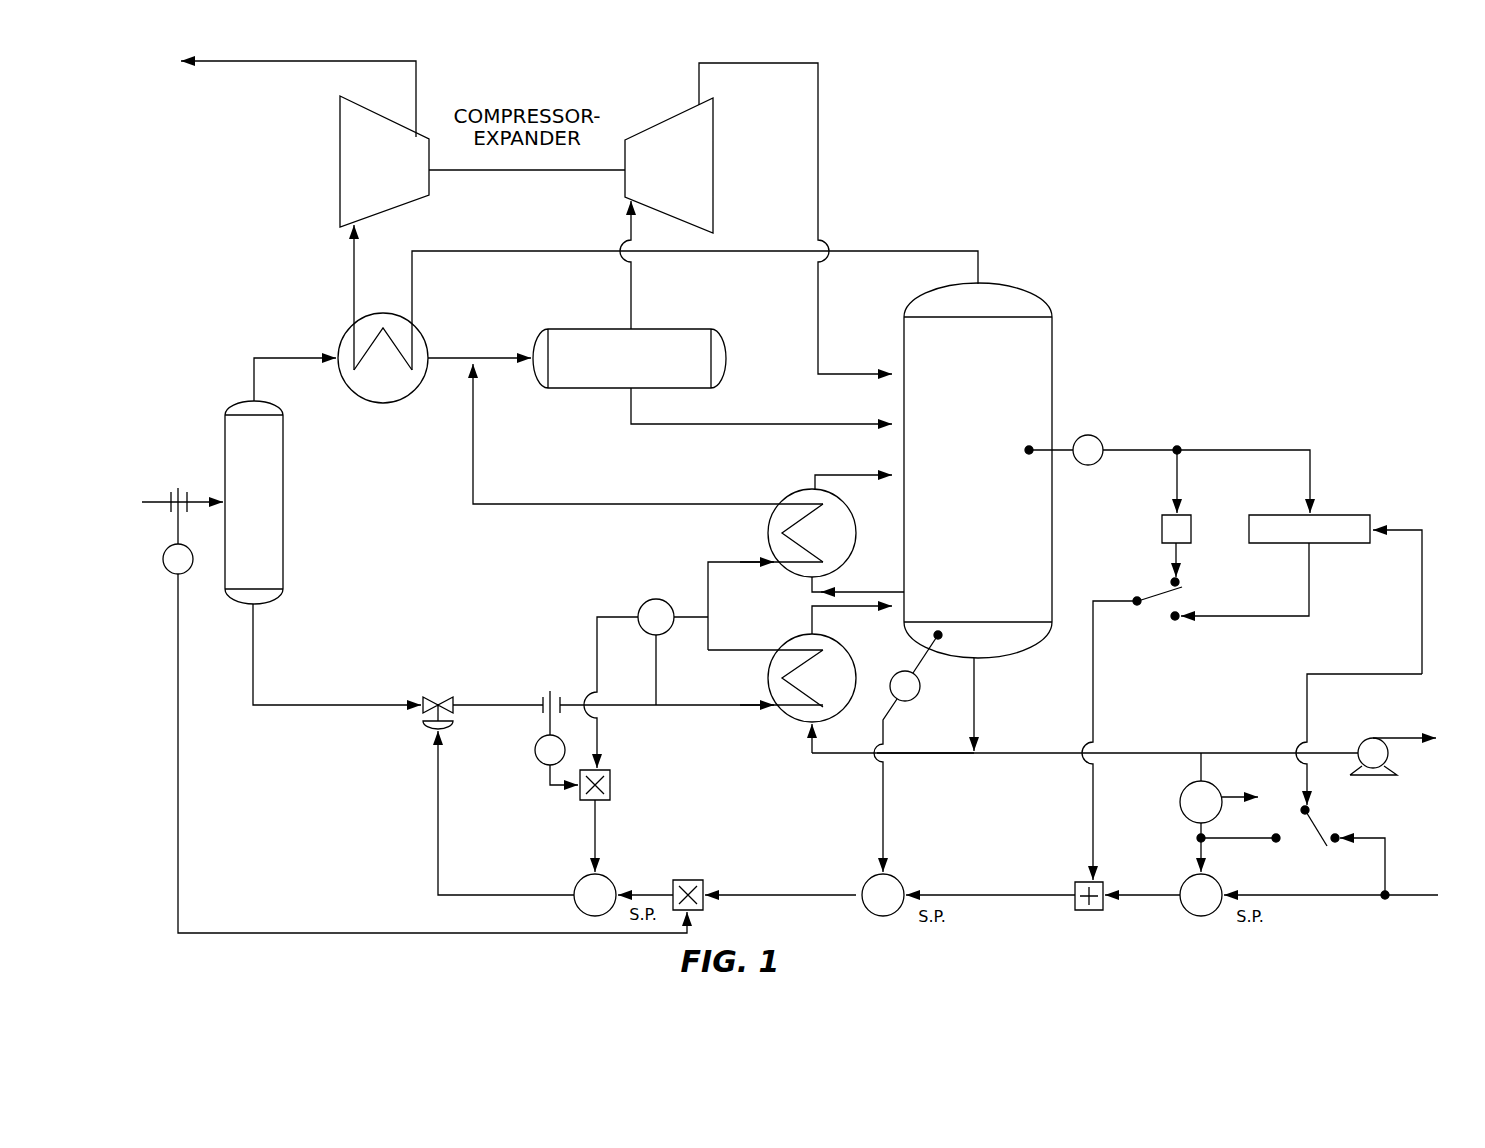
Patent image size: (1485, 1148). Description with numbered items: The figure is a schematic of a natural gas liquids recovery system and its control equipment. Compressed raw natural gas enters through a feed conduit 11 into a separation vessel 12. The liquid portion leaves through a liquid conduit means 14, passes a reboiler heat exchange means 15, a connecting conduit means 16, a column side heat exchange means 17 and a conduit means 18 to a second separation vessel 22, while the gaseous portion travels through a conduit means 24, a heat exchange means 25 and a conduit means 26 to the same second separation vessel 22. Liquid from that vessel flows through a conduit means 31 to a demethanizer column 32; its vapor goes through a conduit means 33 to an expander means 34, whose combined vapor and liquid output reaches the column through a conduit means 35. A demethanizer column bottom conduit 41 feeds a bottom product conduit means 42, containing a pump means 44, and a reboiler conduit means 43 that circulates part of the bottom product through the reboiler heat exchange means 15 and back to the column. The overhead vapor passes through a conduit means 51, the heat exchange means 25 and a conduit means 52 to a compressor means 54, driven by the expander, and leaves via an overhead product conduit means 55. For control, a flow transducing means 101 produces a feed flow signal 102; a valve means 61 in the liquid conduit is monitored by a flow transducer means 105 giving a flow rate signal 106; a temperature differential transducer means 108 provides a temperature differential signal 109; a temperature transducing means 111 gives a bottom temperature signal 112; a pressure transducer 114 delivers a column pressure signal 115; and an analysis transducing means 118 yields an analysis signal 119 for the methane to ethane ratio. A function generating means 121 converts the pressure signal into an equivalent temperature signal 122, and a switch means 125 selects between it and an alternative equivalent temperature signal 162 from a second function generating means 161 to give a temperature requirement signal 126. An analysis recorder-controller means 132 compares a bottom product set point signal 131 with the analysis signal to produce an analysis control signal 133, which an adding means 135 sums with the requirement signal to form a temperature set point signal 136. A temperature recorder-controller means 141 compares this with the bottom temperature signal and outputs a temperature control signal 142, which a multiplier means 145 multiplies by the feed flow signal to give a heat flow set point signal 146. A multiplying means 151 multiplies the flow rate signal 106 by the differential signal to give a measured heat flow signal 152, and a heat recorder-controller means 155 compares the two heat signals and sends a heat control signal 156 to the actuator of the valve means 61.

The feed conduit 11 is at (149, 500).
The separation vessel 12 is at (283, 488).
The liquid conduit means 14 is at (253, 663).
The reboiler heat exchange means 15 is at (788, 645).
The connecting conduit means 16 is at (718, 562).
The column side heat exchange means 17 is at (784, 497).
The conduit means 18 is at (529, 503).
The second separation vessel 22 is at (569, 329).
The conduit means 24 is at (286, 358).
The heat exchange means 25 is at (381, 403).
The conduit means 26 is at (456, 358).
The conduit means 31 is at (776, 424).
The demethanizer column 32 is at (1052, 330).
The conduit means 33 is at (631, 228).
The expander means 34 is at (713, 170).
The conduit means 35 is at (818, 170).
The demethanizer column bottom conduit 41 is at (974, 700).
The bottom product conduit means 42 is at (1023, 754).
The reboiler conduit means 43 is at (921, 755).
The pump means 44 is at (1372, 778).
The conduit means 51 is at (919, 251).
The conduit means 52 is at (354, 276).
The compressor means 54 is at (340, 170).
The overhead product conduit means 55 is at (233, 62).
The valve means 61 is at (457, 697).
The flow transducing means 101 is at (168, 572).
The feed flow signal 102 is at (178, 745).
The flow transducer means 105 is at (535, 750).
The flow rate signal 106 is at (550, 785).
The temperature differential transducer means 108 is at (657, 599).
The temperature differential signal 109 is at (597, 650).
The temperature transducing means 111 is at (908, 701).
The bottom temperature signal 112 is at (883, 810).
The pressure transducer 114 is at (1097, 435).
The column pressure signal 115 is at (1239, 450).
The analysis transducing means 118 is at (1185, 790).
The analysis signal 119 is at (1196, 838).
The function generating means 121 is at (1162, 530).
The equivalent temperature signal 122 is at (1180, 550).
The switch means 125 is at (1137, 599).
The temperature requirement signal 126 is at (1093, 700).
The bottom product set point signal 131 is at (1421, 895).
The analysis recorder-controller means 132 is at (1213, 913).
The analysis control signal 133 is at (1151, 897).
The adding means 135 is at (1078, 910).
The temperature set point signal 136 is at (1001, 895).
The temperature recorder-controller means 141 is at (868, 913).
The temperature control signal 142 is at (801, 895).
The multiplier means 145 is at (688, 880).
The heat flow set point signal 146 is at (654, 895).
The multiplying means 151 is at (610, 785).
The measured heat flow signal 152 is at (595, 830).
The heat recorder-controller means 155 is at (580, 884).
The heat control signal 156 is at (438, 822).
The function generating means 161 is at (1345, 515).
The alternative equivalent temperature signal 162 is at (1309, 580).